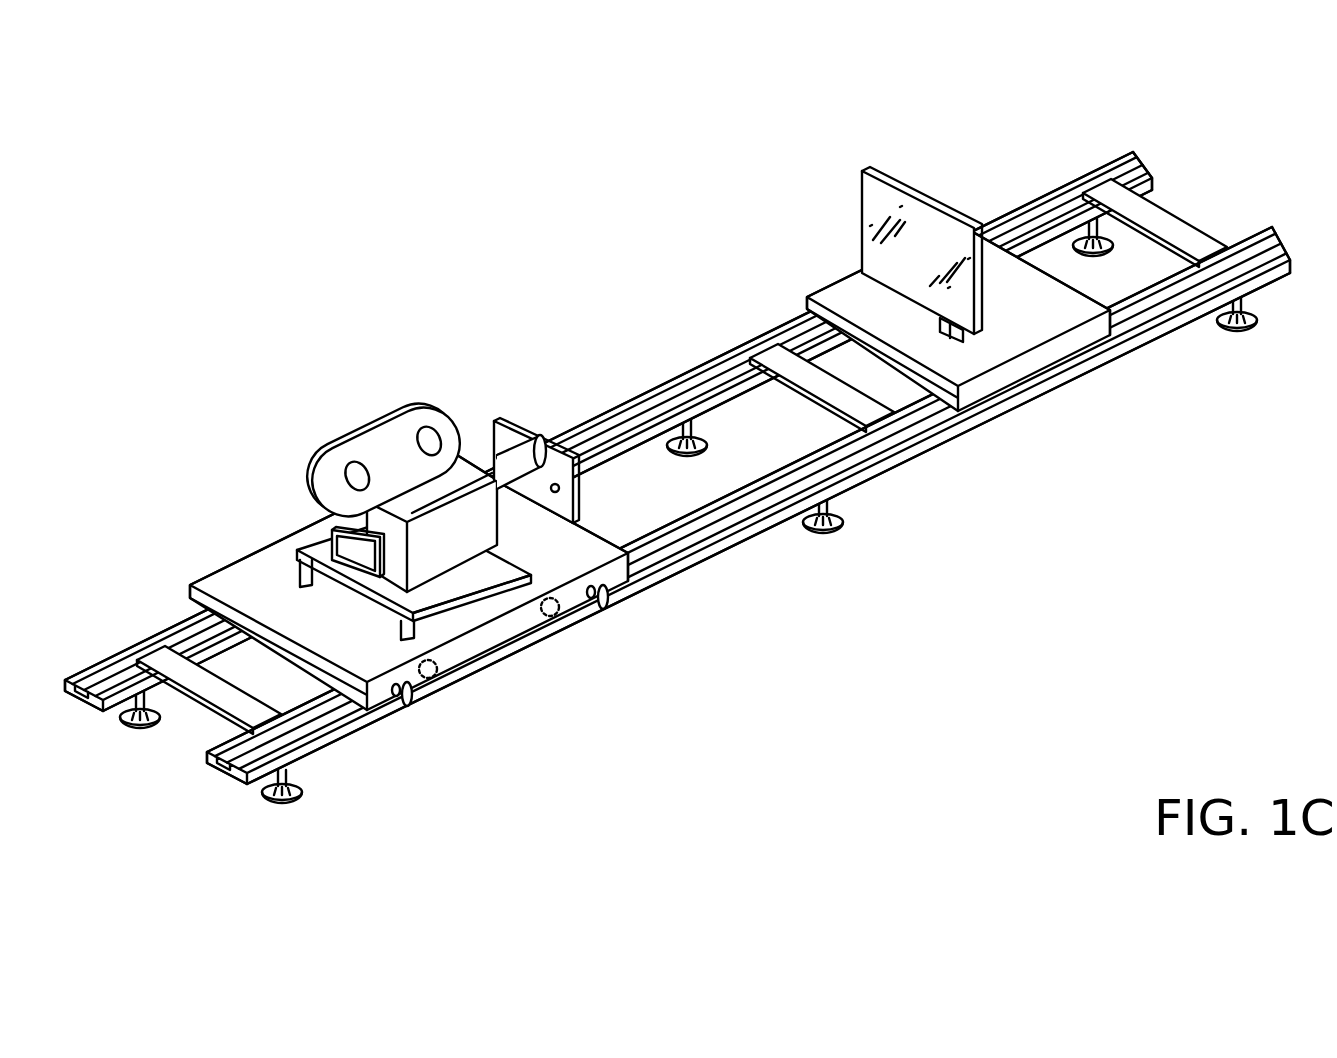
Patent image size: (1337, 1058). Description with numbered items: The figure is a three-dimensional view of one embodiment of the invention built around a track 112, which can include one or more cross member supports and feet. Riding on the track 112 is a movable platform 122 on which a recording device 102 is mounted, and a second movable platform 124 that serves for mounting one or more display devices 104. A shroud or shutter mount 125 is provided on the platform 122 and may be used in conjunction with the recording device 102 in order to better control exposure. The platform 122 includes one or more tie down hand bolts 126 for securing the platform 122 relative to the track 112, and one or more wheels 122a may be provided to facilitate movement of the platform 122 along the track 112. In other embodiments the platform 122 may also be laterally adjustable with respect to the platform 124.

The recording device 102 is at (388, 374).
The display device 104 is at (930, 219).
The track 112 is at (1046, 424).
The movable platform 122 is at (612, 538).
The wheels 122a is at (551, 617).
The movable platform 124 is at (841, 297).
The shroud or shutter mount 125 is at (518, 420).
The tie down hand bolts 126 is at (410, 702).